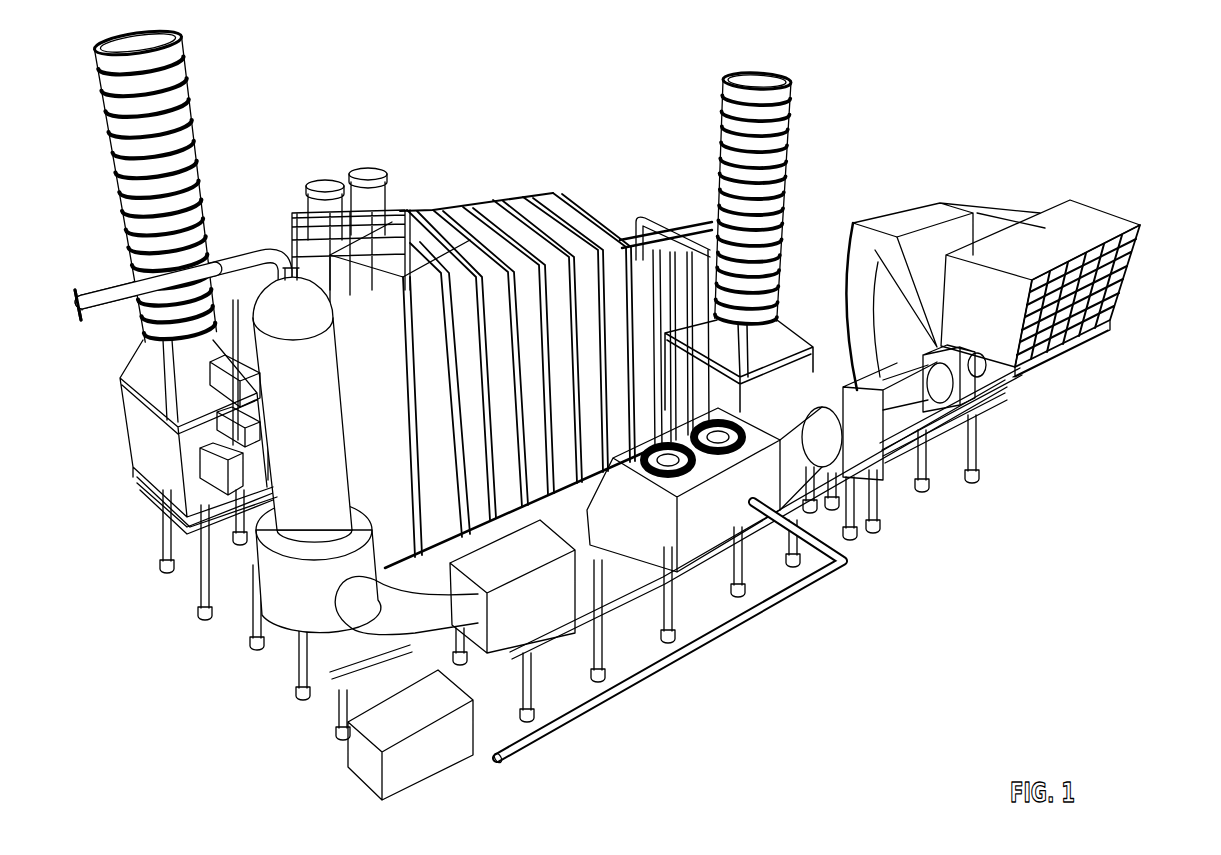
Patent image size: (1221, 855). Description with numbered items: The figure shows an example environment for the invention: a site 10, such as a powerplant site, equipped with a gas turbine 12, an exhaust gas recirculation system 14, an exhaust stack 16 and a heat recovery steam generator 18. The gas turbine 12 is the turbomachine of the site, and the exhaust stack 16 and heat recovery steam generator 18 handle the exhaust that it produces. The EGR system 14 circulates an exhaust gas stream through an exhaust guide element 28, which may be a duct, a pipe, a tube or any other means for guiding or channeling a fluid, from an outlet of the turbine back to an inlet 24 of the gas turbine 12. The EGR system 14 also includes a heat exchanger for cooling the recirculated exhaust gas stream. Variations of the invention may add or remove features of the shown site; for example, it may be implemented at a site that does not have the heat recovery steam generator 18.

The site 10 is at (635, 414).
The gas turbine 12 is at (1013, 197).
The EGR system 14 is at (541, 765).
The exhaust stack 16 is at (199, 78).
The heat recovery steam generator 18 is at (491, 196).
The inlet 24 is at (1132, 285).
The exhaust guide element 28 is at (358, 618).